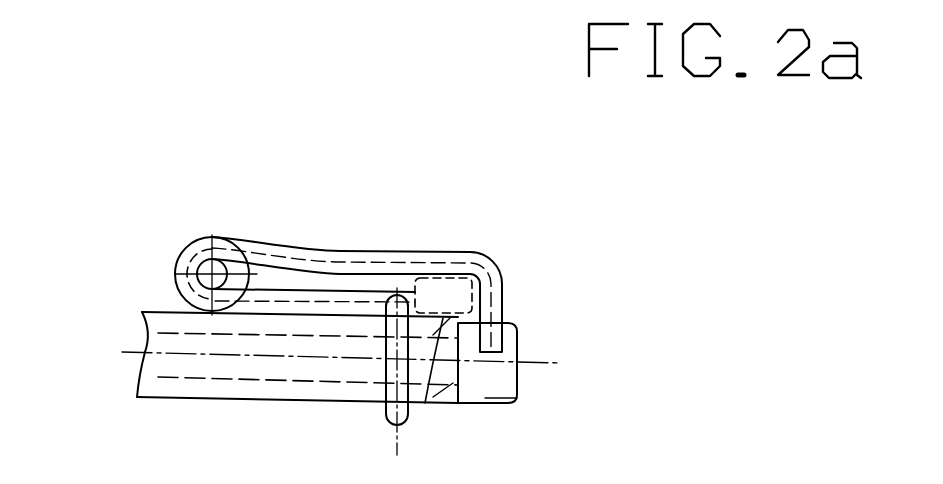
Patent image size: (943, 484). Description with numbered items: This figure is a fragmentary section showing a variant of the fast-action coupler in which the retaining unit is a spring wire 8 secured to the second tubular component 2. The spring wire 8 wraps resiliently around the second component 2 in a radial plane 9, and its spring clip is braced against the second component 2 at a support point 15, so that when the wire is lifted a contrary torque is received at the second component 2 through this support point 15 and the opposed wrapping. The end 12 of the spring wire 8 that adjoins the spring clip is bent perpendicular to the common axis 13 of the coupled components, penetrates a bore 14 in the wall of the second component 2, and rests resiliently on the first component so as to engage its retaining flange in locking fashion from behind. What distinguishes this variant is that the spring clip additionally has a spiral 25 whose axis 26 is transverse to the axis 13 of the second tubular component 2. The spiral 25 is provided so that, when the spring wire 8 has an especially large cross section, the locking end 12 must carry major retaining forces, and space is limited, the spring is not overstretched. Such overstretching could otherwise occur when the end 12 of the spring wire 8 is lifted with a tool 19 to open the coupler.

The spring wire 8 is at (101, 163).
The second component 2 is at (293, 367).
The radial plane 9 is at (352, 378).
The end of the spring wire 12 is at (388, 264).
The common axis 13 is at (573, 363).
The bore 14 is at (567, 278).
The support point 15 is at (216, 321).
The tool 19 is at (441, 241).
The spiral 25 is at (136, 269).
The axis of the spiral 26 is at (216, 225).